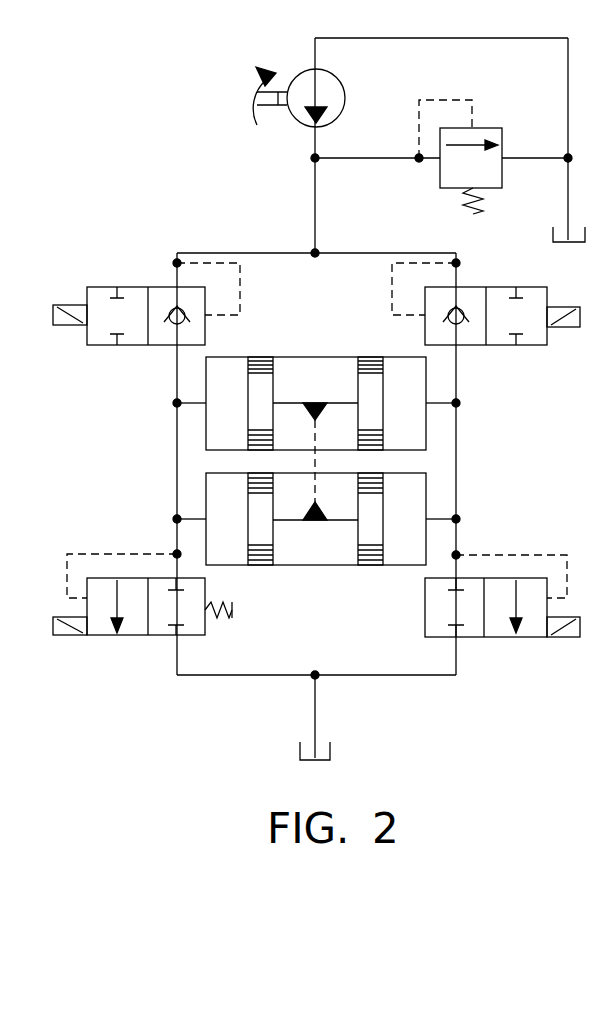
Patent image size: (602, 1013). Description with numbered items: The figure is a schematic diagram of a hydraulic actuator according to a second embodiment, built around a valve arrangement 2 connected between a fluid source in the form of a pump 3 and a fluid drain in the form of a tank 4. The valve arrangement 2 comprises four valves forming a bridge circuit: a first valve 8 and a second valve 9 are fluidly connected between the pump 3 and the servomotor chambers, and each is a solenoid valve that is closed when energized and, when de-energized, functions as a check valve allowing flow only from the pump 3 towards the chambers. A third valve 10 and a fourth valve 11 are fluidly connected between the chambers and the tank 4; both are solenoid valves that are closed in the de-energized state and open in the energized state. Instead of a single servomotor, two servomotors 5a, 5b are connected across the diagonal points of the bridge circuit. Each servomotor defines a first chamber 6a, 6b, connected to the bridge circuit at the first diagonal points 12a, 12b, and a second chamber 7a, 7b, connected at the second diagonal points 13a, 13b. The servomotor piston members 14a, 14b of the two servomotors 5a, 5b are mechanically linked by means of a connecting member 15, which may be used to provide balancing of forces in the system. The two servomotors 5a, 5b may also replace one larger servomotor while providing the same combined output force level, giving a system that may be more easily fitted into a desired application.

The valve arrangement 2 is at (189, 253).
The pump 3 is at (298, 72).
The tank 4 is at (325, 760).
The servomotor 5a is at (318, 558).
The servomotor 5b is at (307, 365).
The first chamber 6a is at (220, 505).
The first chamber 6b is at (220, 382).
The second chamber 7a is at (400, 495).
The second chamber 7b is at (400, 387).
The first valve 8 is at (131, 287).
The second valve 9 is at (503, 287).
The third valve 10 is at (137, 637).
The fourth valve 11 is at (517, 638).
The first diagonal point 12a is at (177, 519).
The first diagonal point 12b is at (177, 403).
The second diagonal point 13a is at (456, 519).
The second diagonal point 13b is at (456, 403).
The servomotor piston member 14a is at (315, 521).
The servomotor piston member 14b is at (315, 402).
The connecting member 15 is at (315, 467).